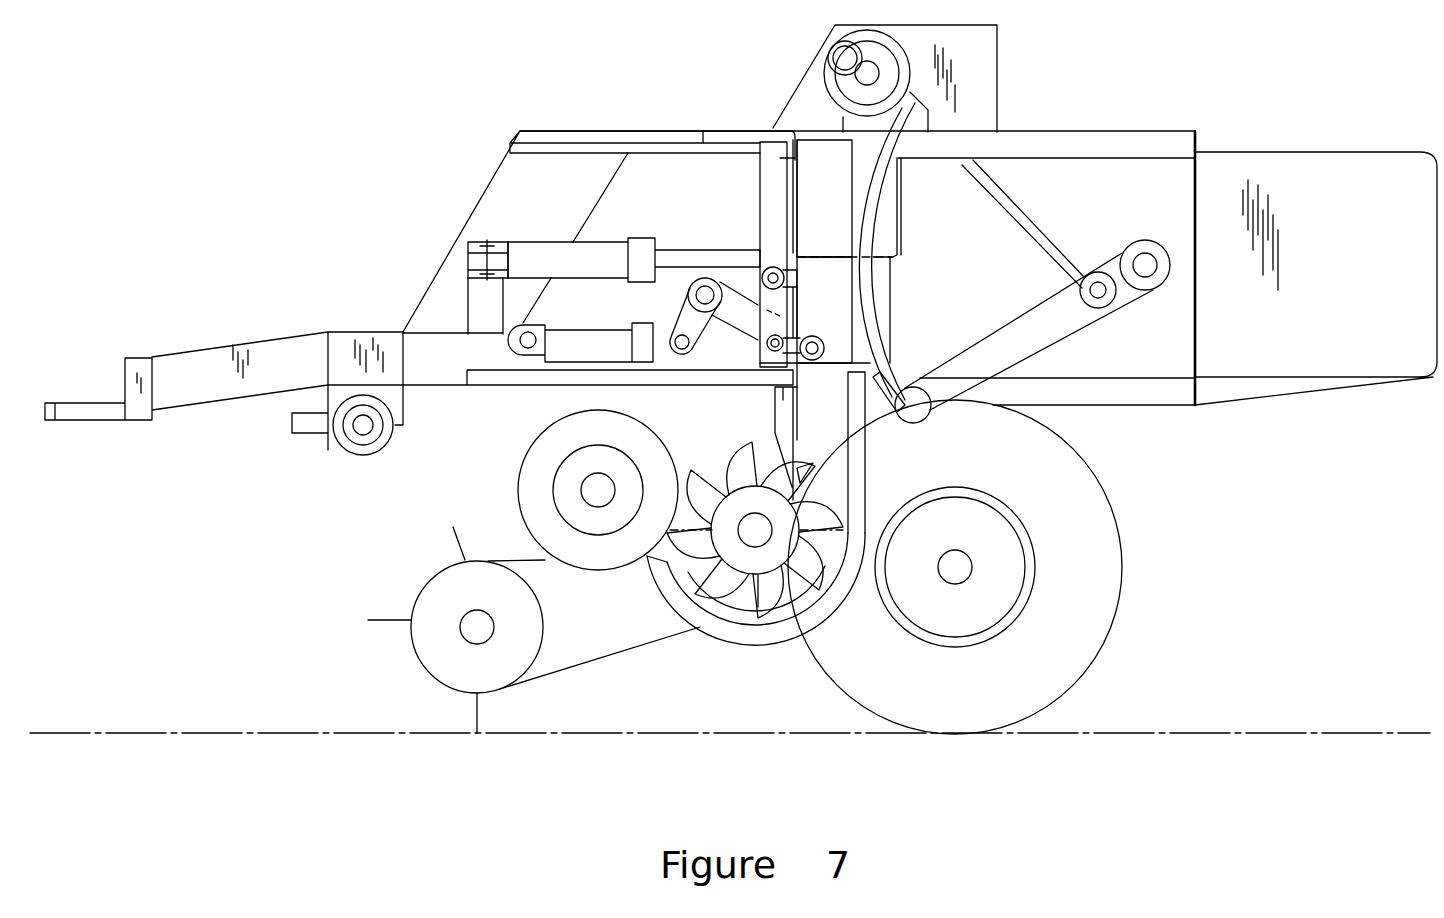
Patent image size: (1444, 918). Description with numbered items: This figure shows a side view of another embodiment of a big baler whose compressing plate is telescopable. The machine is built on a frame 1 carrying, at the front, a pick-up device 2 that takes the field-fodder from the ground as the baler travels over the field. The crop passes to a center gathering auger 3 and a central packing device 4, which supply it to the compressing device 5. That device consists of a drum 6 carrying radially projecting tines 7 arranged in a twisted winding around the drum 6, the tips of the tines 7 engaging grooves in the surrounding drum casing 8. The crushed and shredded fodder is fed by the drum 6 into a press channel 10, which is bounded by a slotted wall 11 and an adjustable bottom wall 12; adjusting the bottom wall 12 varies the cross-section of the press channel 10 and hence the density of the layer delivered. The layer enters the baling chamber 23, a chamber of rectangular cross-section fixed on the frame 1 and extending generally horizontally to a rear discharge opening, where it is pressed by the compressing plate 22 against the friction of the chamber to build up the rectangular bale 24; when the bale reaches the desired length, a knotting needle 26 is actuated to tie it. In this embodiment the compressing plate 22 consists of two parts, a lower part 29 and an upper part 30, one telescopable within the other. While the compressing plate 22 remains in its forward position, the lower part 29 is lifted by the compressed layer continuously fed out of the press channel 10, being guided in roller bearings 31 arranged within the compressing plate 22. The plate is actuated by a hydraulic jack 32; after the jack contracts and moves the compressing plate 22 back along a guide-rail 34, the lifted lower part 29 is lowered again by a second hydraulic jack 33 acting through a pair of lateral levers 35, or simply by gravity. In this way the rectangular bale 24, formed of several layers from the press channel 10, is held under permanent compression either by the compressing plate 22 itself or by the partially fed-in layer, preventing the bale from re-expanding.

The frame 1 is at (345, 345).
The pick-up device 2 is at (430, 595).
The center gathering auger 3 is at (530, 475).
The central packing device 4 is at (730, 548).
The compressing device 5 is at (737, 565).
The drum 6 is at (742, 590).
The tines 7 is at (740, 588).
The drum casing 8 is at (770, 617).
The press channel 10 is at (830, 418).
The slotted wall 11 is at (805, 478).
The bottom wall 12 is at (867, 461).
The compressing plate 22 is at (768, 200).
The baling chamber 23 is at (1132, 178).
The rectangular bale 24 is at (1284, 167).
The knotting needle 26 is at (873, 328).
The lower part 29 is at (882, 277).
The upper part 30 is at (822, 157).
The roller bearings 31 is at (773, 352).
The hydraulic jack 32 is at (535, 257).
The second hydraulic jack 33 is at (563, 338).
The guide-rail 34 is at (525, 143).
The lateral levers 35 is at (733, 320).